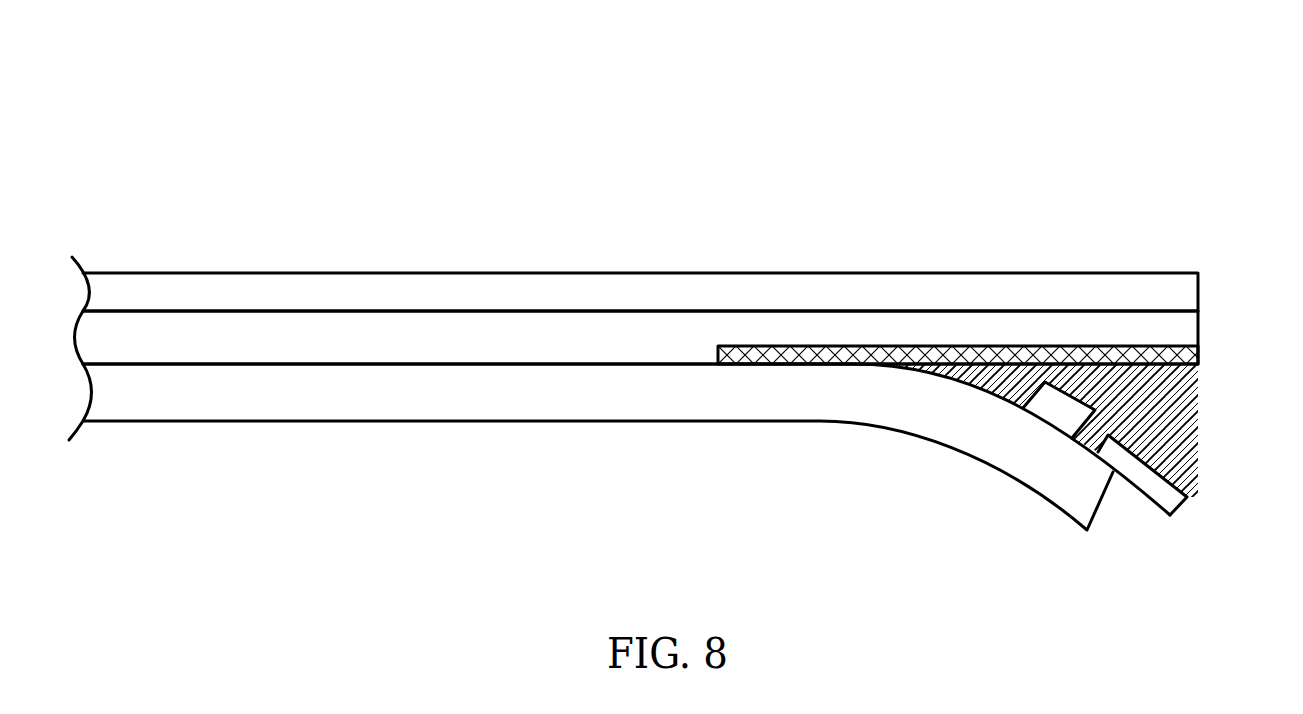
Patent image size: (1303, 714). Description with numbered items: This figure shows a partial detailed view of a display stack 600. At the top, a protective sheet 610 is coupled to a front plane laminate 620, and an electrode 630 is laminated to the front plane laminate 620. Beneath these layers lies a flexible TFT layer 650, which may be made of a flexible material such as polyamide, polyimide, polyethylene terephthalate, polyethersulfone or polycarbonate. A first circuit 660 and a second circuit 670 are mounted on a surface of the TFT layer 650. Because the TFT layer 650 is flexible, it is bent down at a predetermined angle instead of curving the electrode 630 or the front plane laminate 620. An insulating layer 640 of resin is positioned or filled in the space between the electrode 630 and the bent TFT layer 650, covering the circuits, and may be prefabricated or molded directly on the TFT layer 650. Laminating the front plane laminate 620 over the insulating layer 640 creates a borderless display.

The display stack 600 is at (681, 315).
The protective sheet 610 is at (950, 292).
The front plane laminate 620 is at (1188, 332).
The electrode 630 is at (1194, 358).
The insulating layer 640 is at (1206, 416).
The flexible TFT layer 650 is at (1022, 463).
The first circuit 660 is at (1070, 423).
The second circuit 670 is at (1133, 472).